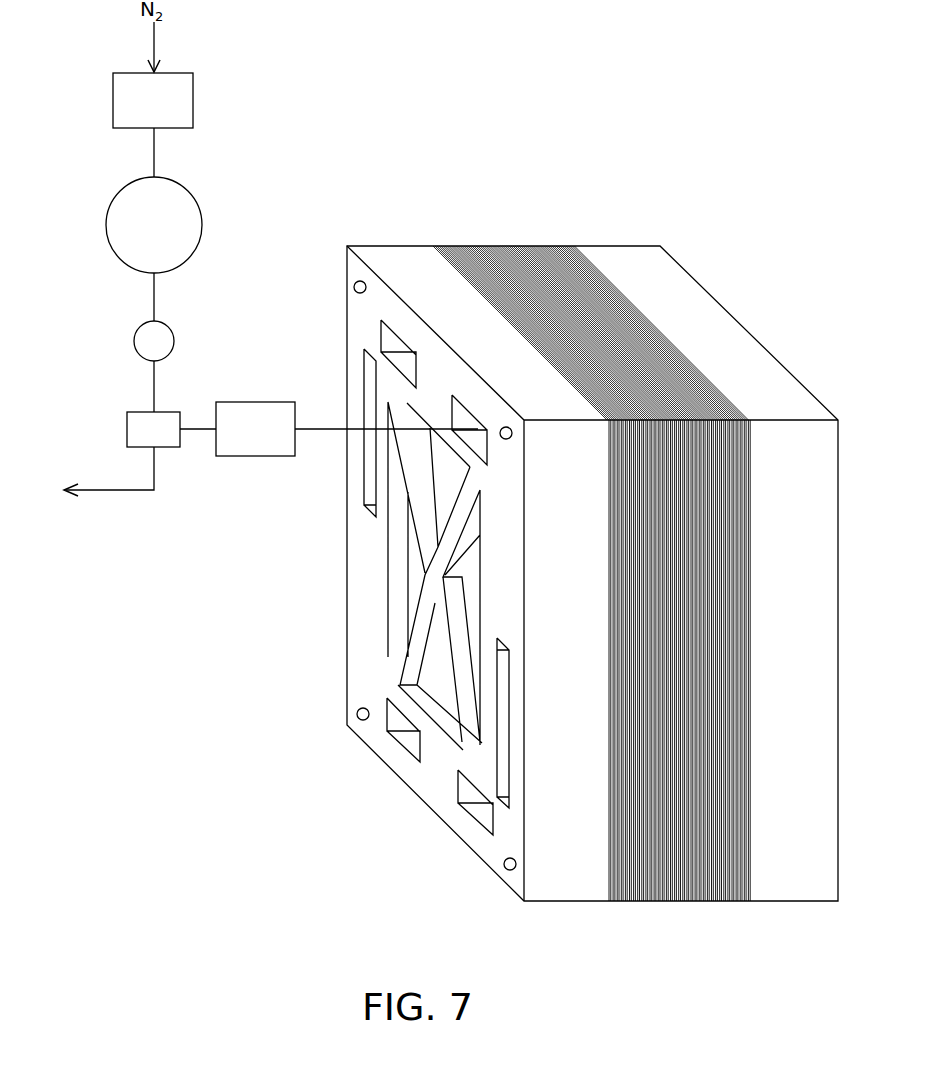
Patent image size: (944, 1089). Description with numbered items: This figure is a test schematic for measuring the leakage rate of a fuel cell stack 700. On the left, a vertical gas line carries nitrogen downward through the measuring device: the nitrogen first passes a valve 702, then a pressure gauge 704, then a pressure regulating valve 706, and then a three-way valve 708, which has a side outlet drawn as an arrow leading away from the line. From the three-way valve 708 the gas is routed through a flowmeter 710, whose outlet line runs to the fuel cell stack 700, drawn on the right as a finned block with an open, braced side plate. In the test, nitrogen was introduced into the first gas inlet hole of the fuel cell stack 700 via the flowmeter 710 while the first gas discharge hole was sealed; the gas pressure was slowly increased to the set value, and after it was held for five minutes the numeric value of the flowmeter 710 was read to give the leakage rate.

The fuel cell stack 700 is at (615, 212).
The valve 702 is at (113, 100).
The pressure gauge 704 is at (107, 226).
The pressure regulating valve 706 is at (134, 341).
The three-way valve 708 is at (127, 430).
The flowmeter 710 is at (254, 402).